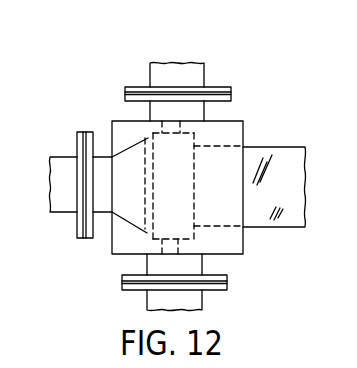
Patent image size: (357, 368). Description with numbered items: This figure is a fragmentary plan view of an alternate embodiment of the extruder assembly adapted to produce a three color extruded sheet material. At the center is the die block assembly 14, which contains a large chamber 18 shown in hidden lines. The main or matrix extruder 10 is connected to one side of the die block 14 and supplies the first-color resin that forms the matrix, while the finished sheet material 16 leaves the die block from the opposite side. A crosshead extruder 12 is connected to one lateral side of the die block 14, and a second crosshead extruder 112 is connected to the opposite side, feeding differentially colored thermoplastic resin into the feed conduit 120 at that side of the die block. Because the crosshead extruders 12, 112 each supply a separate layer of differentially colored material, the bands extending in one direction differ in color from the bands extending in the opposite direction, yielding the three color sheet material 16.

The main extruder 10 is at (66, 156).
The crosshead extruder 12 is at (204, 304).
The die block assembly 14 is at (112, 250).
The sheet material 16 is at (290, 227).
The chamber 18 is at (197, 138).
The second crosshead extruder 112 is at (207, 63).
The feed conduit 120 is at (156, 125).